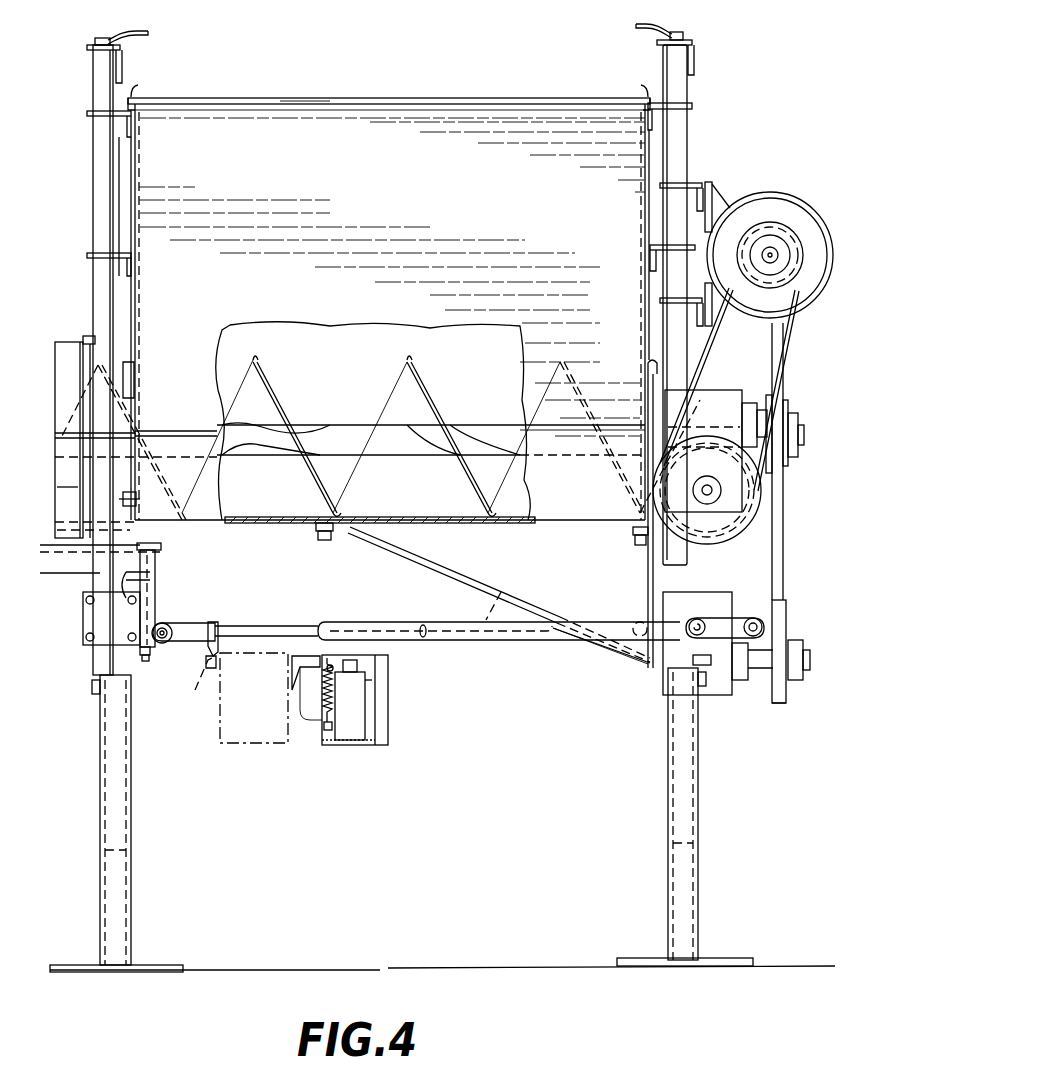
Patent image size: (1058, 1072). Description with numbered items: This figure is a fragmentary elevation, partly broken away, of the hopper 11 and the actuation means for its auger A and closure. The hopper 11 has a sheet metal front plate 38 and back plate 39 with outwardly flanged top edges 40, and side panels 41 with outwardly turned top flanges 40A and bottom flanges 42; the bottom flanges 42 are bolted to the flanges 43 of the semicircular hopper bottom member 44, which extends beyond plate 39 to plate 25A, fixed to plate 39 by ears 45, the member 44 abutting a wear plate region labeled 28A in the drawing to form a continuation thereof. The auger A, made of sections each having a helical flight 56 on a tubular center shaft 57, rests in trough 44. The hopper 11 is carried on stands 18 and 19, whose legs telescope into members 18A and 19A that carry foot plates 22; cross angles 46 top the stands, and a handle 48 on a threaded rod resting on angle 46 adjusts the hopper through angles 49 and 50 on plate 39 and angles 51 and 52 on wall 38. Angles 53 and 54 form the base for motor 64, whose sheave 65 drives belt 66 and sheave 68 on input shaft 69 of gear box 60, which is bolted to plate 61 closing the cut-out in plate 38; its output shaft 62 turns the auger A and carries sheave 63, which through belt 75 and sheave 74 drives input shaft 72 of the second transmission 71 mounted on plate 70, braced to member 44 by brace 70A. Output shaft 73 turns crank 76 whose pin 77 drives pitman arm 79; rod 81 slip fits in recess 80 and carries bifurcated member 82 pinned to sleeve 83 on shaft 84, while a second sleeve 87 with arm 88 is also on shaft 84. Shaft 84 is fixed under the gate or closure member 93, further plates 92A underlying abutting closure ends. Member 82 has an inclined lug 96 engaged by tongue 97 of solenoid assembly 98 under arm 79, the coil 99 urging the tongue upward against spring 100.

The hopper 11 is at (476, 76).
The stand 18 is at (672, 320).
The telescoping stand member 18A is at (668, 812).
The stand 19 is at (110, 300).
The telescoping stand member 19A is at (131, 876).
The foot plate 22 is at (160, 965).
The plate 25A is at (89, 336).
The inlet chute 28A is at (64, 342).
The front plate 38 is at (648, 154).
The back plate 39 is at (133, 184).
The outwardly flanged top edge 40 is at (131, 97).
The top flange 40A is at (303, 104).
The side panel 41 is at (397, 203).
The bottom flange 42 is at (168, 430).
The flange 43 is at (164, 444).
The hopper bottom member 44 is at (415, 524).
The ear 45 is at (129, 493).
The transverse cross angle 46 is at (88, 48).
The handle 48 is at (148, 31).
The angle 49 is at (88, 114).
The angle 50 is at (88, 256).
The angle member 51 is at (694, 105).
The angle member 52 is at (661, 248).
The angle 53 is at (697, 183).
The angle 54 is at (661, 300).
The helical flight 56 is at (468, 483).
The tubular center shaft 57 is at (471, 425).
The gear box 60 is at (719, 392).
The flat plate 61 is at (652, 364).
The output shaft 62 is at (805, 425).
The sheave 63 is at (790, 404).
The motor 64 is at (797, 206).
The sheave 65 is at (789, 248).
The belt 66 is at (797, 339).
The sheave 68 is at (760, 502).
The input shaft 69 is at (711, 494).
The plate 70 is at (648, 575).
The brace 70A is at (440, 573).
The second transmission 71 is at (712, 604).
The input shaft 72 is at (812, 660).
The output shaft 73 is at (697, 618).
The sheave 74 is at (790, 615).
The belt 75 is at (786, 532).
The crank 76 is at (711, 640).
The pin 77 is at (755, 618).
The pitman arm 79 is at (554, 626).
The central recess 80 is at (504, 596).
The rod 81 is at (302, 624).
The bifurcated member 82 is at (206, 622).
The sleeve 83 is at (158, 609).
The shaft 84 is at (146, 661).
The second sleeve 87 is at (156, 567).
The arm 88 is at (150, 578).
The plate 92A is at (160, 548).
The closure member 93 is at (73, 562).
The inclined lug means 96 is at (208, 646).
The tongue 97 is at (203, 692).
The solenoid assembly 98 is at (390, 723).
The solenoid coil 99 is at (366, 704).
The spring 100 is at (326, 716).
The auger A is at (318, 431).